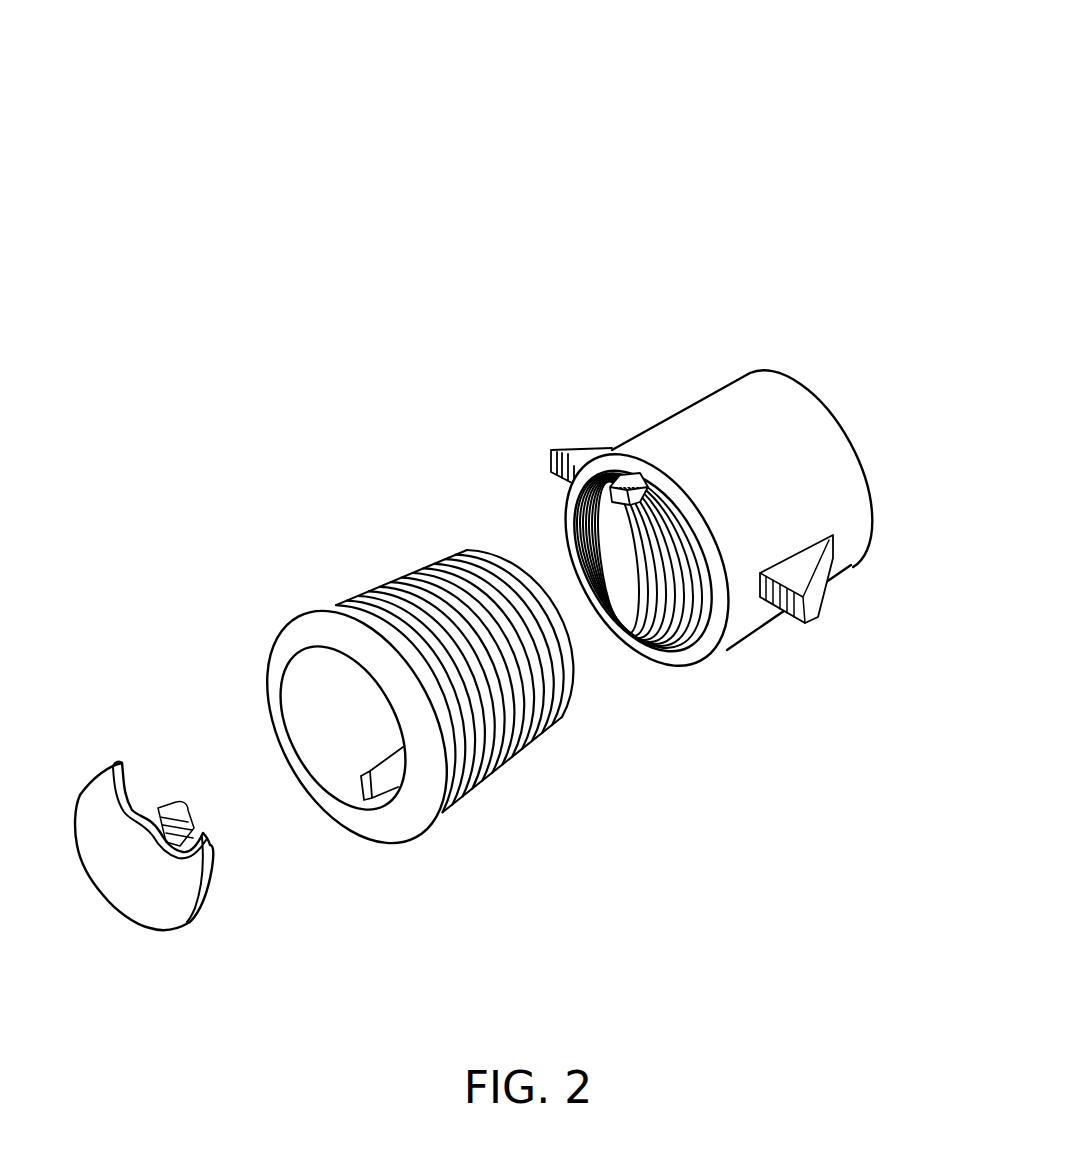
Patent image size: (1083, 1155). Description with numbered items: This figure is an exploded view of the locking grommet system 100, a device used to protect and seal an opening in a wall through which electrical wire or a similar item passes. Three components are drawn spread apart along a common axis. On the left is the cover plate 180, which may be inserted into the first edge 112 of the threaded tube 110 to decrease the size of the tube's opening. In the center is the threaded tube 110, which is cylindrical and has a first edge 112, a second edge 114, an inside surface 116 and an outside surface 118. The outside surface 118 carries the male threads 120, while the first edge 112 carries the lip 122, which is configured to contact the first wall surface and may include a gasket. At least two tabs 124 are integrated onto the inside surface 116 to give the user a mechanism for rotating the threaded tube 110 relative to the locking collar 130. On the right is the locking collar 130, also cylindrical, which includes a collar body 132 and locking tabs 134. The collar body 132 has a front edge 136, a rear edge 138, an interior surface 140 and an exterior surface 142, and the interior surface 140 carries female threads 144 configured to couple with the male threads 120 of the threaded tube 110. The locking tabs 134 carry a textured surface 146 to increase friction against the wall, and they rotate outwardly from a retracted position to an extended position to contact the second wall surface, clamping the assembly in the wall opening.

The locking grommet system 100 is at (796, 93).
The threaded tube 110 is at (335, 522).
The first edge 112 is at (305, 785).
The second edge 114 is at (572, 680).
The inside surface 116 is at (305, 687).
The outside surface 118 is at (543, 737).
The male threads 120 is at (447, 583).
The lip 122 is at (447, 807).
The tabs 124 is at (383, 780).
The locking collar 130 is at (605, 342).
The collar body 132 is at (822, 410).
The locking tabs 134 is at (808, 570).
The front edge 136 is at (732, 648).
The rear edge 138 is at (772, 373).
The interior surface 140 is at (623, 537).
The exterior surface 142 is at (855, 498).
The female threads 144 is at (614, 562).
The textured surface 146 is at (800, 612).
The cover plate 180 is at (100, 802).